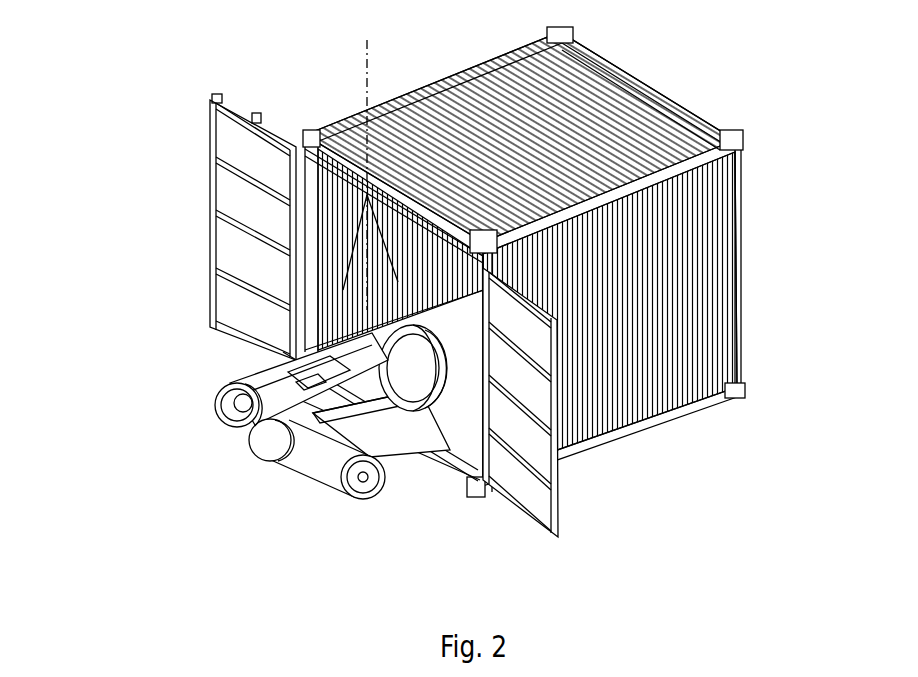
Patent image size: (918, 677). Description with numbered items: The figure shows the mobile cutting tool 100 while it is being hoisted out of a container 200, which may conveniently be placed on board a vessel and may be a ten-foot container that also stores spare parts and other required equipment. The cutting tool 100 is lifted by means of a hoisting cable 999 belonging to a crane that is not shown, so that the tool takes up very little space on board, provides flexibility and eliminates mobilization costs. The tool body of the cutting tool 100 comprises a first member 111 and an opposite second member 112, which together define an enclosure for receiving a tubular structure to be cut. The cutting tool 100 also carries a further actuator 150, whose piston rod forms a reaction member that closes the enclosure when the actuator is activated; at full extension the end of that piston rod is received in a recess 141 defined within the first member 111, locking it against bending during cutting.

The container 200 is at (633, 128).
The hoisting cable 999 is at (366, 80).
The mobile cutting tool 100 is at (287, 436).
The first member 111 is at (210, 410).
The second member 112 is at (263, 443).
The recess 141 is at (243, 407).
The further actuator 150 is at (330, 468).